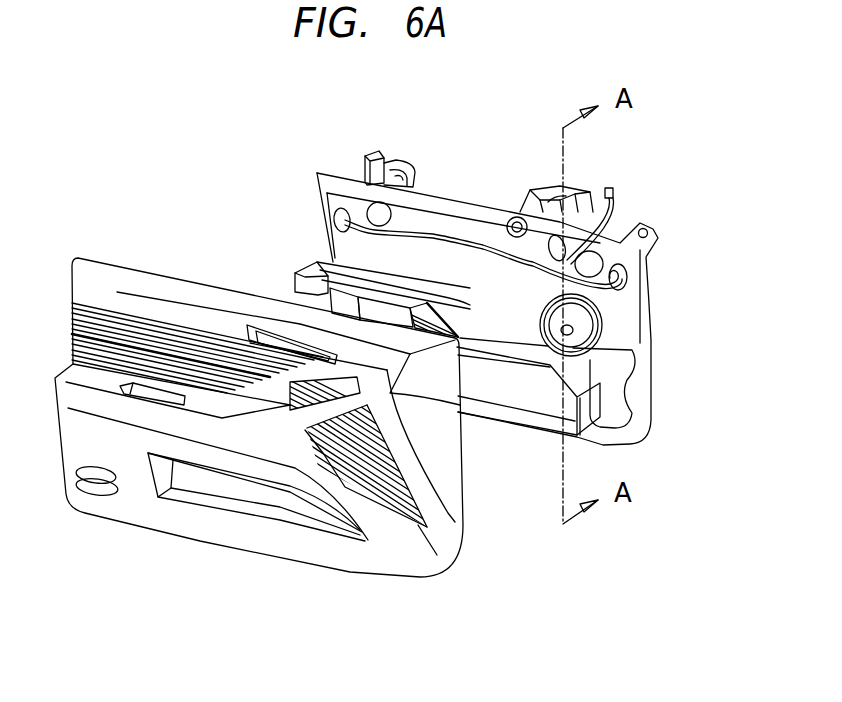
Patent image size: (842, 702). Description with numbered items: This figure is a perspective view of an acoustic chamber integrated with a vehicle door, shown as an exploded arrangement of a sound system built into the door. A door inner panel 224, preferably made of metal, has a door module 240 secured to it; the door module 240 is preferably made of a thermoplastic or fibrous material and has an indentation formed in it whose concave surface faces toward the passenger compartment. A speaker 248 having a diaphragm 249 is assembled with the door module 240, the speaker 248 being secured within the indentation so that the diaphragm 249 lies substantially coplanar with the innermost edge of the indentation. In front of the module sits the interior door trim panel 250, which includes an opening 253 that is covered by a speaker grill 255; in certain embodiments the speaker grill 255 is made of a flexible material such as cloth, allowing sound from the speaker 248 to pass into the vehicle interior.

The door inner panel 224 is at (372, 150).
The door module 240 is at (655, 226).
The speaker 248 is at (522, 318).
The diaphragm 249 is at (573, 329).
The interior door trim panel 250 is at (183, 293).
The opening 253 is at (323, 453).
The speaker grill 255 is at (370, 458).